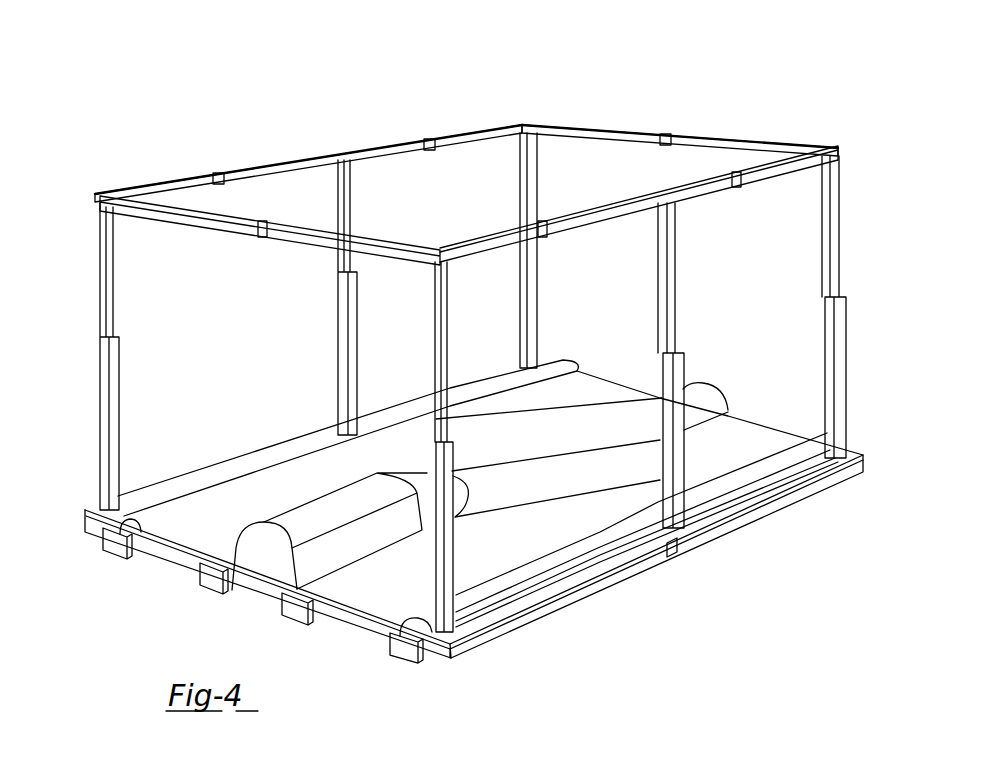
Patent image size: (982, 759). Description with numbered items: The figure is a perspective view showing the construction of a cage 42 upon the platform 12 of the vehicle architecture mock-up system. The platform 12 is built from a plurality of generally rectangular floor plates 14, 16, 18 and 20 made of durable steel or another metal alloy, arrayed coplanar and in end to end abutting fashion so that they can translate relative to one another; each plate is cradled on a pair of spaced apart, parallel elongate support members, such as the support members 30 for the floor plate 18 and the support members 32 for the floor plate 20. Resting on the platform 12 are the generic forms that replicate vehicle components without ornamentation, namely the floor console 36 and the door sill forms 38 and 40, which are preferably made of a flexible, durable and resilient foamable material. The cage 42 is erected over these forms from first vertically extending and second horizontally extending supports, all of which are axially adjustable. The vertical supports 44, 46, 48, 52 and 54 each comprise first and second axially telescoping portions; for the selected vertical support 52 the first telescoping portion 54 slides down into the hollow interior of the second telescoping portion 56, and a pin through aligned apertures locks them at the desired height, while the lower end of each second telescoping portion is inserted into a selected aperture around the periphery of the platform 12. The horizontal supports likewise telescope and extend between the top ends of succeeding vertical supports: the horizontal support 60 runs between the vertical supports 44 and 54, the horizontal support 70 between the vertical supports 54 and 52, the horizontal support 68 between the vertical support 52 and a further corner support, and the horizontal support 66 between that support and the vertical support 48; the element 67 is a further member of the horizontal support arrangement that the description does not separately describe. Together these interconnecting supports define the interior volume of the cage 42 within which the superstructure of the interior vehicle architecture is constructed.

The platform 12 is at (472, 552).
The floor plate 14 is at (490, 392).
The floor plate 16 is at (775, 505).
The floor plate 18 is at (176, 483).
The floor plate 20 is at (366, 630).
The elongate support member 30 is at (115, 541).
The elongate support member 32 is at (290, 608).
The generic floor console 36 is at (258, 553).
The door sill form 38 is at (567, 560).
The door sill form 40 is at (293, 458).
The cage 42 is at (446, 341).
The vertical support 44 is at (430, 340).
The vertical support 46 is at (654, 360).
The vertical support 48 is at (821, 345).
The vertical support 52 is at (328, 290).
The vertical support 54 is at (99, 338).
The second telescoping portion 56 is at (515, 195).
The horizontal support 60 is at (232, 241).
The horizontal support 66 is at (666, 140).
The top rail 67 is at (565, 242).
The horizontal support 68 is at (429, 139).
The horizontal support 70 is at (215, 174).